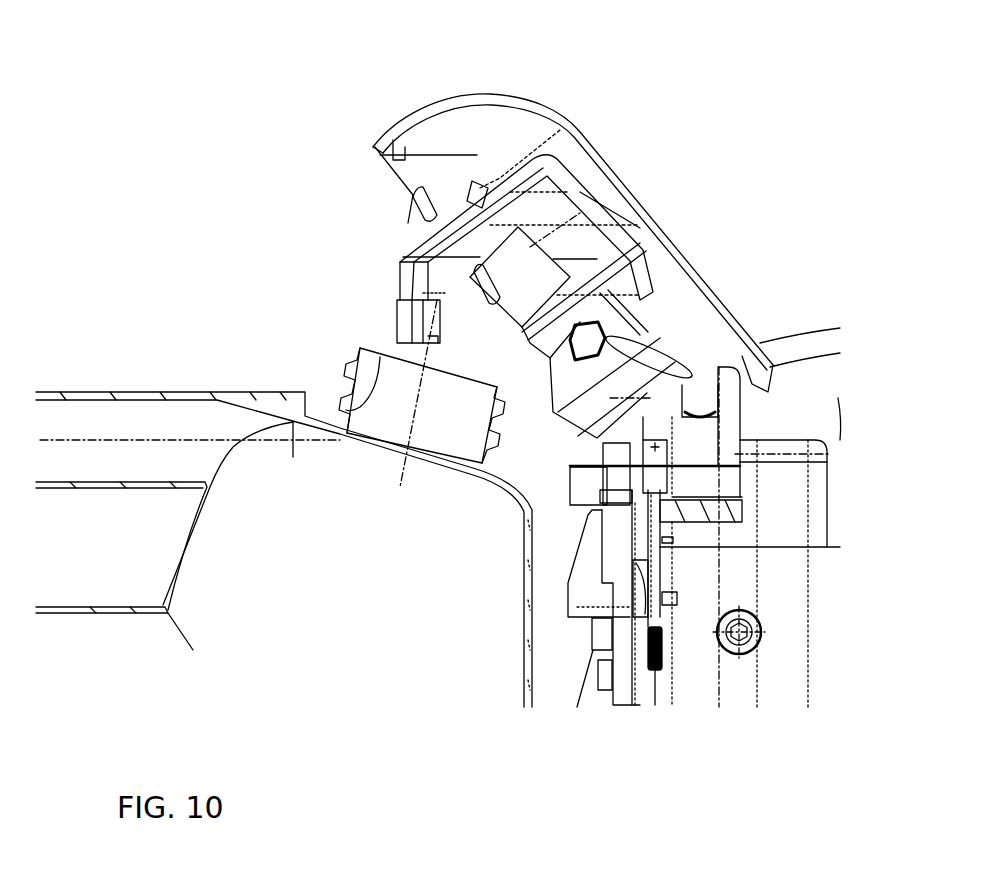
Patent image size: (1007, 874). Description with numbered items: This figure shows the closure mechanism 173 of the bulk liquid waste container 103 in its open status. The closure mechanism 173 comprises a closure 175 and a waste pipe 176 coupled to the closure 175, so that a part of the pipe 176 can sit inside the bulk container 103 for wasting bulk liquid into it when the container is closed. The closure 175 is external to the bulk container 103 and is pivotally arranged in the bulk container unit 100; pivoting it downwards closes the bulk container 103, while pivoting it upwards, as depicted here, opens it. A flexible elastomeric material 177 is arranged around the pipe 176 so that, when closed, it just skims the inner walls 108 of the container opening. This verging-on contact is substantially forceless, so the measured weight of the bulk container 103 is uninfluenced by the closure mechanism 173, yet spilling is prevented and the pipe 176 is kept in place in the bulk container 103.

The bulk container unit 100 is at (745, 238).
The bulk liquid waste container 103 is at (153, 396).
The inner walls 108 is at (380, 348).
The closure mechanism 173 is at (572, 128).
The closure 175 is at (420, 113).
The waste pipe 176 is at (403, 264).
The flexible elastomeric material 177 is at (405, 223).